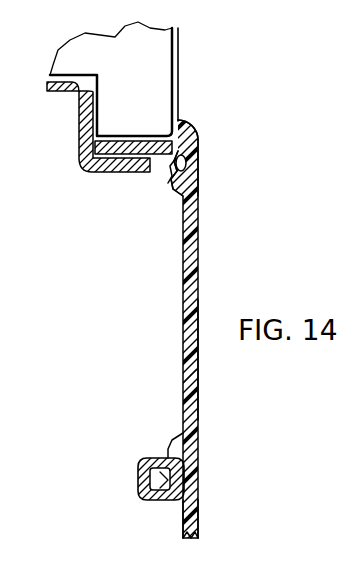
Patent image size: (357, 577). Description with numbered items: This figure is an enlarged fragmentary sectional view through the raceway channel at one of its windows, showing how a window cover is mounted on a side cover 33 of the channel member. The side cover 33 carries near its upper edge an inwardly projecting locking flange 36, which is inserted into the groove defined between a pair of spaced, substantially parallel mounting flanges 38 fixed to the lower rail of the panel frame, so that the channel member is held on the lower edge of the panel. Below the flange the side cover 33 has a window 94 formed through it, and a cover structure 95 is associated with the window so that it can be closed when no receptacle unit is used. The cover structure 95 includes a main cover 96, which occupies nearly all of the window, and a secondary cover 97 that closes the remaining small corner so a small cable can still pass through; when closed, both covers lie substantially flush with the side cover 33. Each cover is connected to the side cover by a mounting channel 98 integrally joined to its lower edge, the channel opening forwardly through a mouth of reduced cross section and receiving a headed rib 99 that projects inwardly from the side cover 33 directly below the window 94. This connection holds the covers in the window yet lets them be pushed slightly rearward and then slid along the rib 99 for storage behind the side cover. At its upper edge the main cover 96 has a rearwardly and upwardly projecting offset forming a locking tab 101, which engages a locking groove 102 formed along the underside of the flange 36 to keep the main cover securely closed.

The side cover 33 is at (193, 505).
The locking flange 36 is at (116, 138).
The mounting flanges 38 is at (106, 172).
The window 94 is at (192, 187).
The cover structure 95 is at (202, 418).
The main cover 96 is at (192, 228).
The secondary cover 97 is at (193, 384).
The mounting channel 98 is at (142, 466).
The headed rib 99 is at (163, 482).
The locking tab 101 is at (170, 170).
The locking groove 102 is at (186, 163).